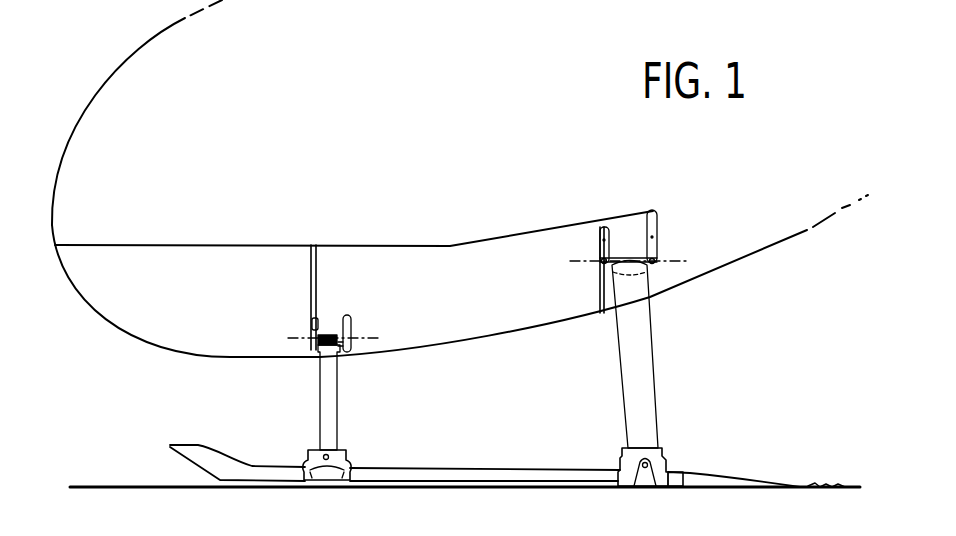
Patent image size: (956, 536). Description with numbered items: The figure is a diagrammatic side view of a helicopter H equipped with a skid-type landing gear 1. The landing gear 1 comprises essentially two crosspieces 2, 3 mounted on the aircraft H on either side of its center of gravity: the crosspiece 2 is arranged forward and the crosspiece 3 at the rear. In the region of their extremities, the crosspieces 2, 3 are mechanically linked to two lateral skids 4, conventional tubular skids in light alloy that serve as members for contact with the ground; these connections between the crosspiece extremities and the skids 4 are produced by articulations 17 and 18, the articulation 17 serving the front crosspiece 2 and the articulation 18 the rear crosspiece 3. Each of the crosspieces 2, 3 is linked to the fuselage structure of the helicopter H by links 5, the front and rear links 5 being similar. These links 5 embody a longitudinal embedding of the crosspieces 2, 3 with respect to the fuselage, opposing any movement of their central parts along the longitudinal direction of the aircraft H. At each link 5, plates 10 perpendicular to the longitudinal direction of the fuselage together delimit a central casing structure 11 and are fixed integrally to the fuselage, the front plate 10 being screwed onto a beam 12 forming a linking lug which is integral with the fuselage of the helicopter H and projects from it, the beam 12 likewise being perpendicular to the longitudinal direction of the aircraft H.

The landing gear 1 is at (678, 352).
The front crosspiece 2 is at (330, 415).
The rear crosspiece 3 is at (636, 403).
The lateral skid 4 is at (452, 475).
The link 5 is at (365, 302).
The plate 10 is at (347, 316).
The central casing structure 11 is at (358, 330).
The beam forming a linking lug 12 is at (310, 295).
The articulation 17 is at (304, 447).
The articulation 18 is at (668, 446).
The helicopter H is at (256, 167).